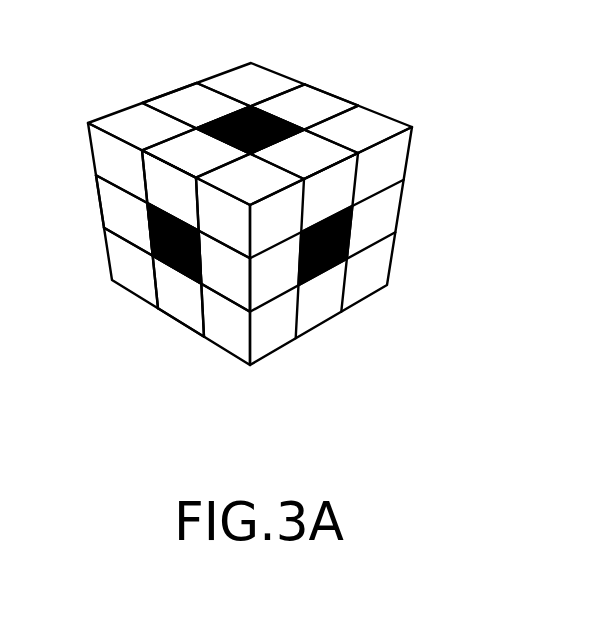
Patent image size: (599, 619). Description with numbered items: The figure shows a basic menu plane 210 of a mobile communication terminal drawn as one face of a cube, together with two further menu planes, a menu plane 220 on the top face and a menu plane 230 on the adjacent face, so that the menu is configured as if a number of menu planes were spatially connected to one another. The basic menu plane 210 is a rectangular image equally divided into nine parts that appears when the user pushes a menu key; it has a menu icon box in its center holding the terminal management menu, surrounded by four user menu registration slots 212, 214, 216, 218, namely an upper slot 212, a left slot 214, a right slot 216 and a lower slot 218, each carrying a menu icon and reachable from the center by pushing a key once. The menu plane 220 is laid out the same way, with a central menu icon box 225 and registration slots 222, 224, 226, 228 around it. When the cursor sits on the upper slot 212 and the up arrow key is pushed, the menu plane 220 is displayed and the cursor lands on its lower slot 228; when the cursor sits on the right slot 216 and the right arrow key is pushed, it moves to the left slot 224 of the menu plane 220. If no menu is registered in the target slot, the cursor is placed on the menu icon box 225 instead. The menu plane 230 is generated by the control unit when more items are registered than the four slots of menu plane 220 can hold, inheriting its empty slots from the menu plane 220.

The basic menu plane 210 is at (105, 197).
The menu plane 220 is at (267, 78).
The menu plane 3 230 is at (391, 202).
The menu icon box 225 is at (243, 108).
The top face cell 222 is at (304, 106).
The menu registration slot 224 is at (196, 105).
The top face cell 226 is at (304, 154).
The menu registration slot 228 is at (196, 152).
The user menu registration slot 212 is at (170, 190).
The user menu registration slot 214 is at (124, 215).
The user menu registration slot 216 is at (224, 271).
The user menu registration slot 218 is at (178, 296).